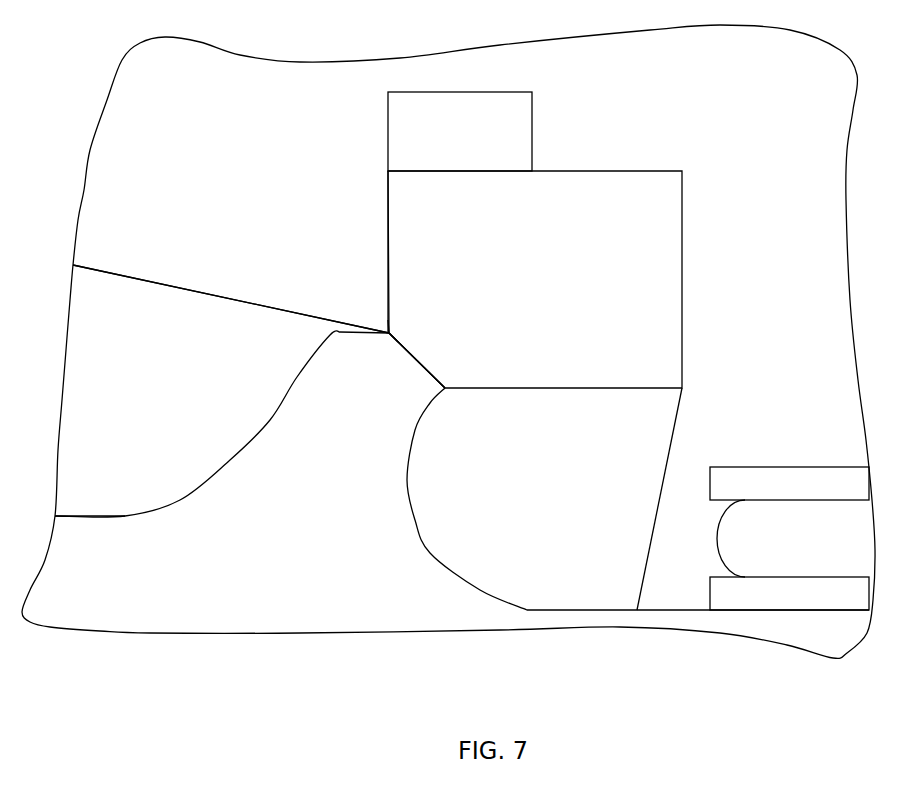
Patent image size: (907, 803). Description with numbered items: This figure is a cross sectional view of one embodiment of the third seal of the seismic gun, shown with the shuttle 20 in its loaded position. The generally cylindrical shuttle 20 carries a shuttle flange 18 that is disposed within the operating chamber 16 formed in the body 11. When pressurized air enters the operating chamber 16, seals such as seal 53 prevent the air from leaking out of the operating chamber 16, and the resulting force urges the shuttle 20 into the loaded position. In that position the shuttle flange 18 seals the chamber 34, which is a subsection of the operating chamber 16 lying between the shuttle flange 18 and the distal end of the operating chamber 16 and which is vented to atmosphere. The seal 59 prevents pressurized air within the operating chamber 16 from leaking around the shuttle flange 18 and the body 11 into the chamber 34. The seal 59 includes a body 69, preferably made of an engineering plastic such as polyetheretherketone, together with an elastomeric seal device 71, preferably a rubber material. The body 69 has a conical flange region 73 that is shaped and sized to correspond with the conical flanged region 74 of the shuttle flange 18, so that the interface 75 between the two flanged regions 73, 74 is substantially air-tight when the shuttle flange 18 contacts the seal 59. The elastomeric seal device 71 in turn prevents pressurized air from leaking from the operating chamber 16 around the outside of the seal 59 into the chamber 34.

The body 11 is at (218, 137).
The operating chamber 16 is at (178, 378).
The shuttle flange 18 is at (308, 461).
The shuttle 20 is at (152, 634).
The chamber 34 is at (545, 491).
The seal 53 is at (822, 467).
The seal 59 is at (352, 246).
The body 69 is at (576, 283).
The elastomeric seal device 71 is at (463, 145).
The conical flange region 73 is at (442, 352).
The conical flanged region 74 is at (392, 365).
The interface 75 is at (397, 338).